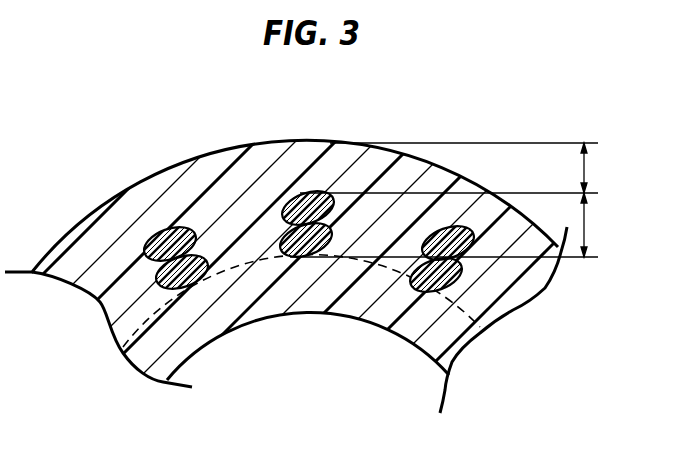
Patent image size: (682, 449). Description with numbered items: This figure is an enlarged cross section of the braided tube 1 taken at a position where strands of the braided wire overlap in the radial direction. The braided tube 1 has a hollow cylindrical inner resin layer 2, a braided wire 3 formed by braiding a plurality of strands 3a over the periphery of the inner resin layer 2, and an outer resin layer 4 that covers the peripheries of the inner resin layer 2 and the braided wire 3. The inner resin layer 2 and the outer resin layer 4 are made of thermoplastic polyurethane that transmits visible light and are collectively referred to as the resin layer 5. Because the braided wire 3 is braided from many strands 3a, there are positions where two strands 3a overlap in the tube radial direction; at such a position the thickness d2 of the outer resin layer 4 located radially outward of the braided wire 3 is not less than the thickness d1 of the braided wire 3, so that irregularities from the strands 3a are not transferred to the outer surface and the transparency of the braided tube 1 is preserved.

The braided tube 1 is at (62, 168).
The inner resin layer 2 is at (217, 323).
The braided wire 3 is at (299, 197).
The strand 3a is at (283, 200).
The outer resin layer 4 is at (237, 250).
The resin layer 5 is at (310, 316).
The thickness of the braided wire d1 is at (453, 225).
The thickness of the outer resin layer d2 is at (458, 168).